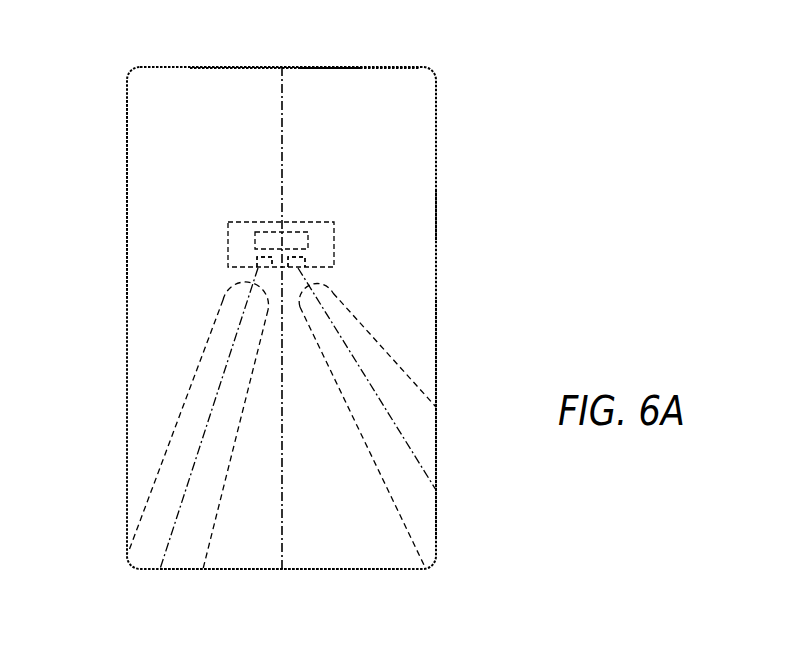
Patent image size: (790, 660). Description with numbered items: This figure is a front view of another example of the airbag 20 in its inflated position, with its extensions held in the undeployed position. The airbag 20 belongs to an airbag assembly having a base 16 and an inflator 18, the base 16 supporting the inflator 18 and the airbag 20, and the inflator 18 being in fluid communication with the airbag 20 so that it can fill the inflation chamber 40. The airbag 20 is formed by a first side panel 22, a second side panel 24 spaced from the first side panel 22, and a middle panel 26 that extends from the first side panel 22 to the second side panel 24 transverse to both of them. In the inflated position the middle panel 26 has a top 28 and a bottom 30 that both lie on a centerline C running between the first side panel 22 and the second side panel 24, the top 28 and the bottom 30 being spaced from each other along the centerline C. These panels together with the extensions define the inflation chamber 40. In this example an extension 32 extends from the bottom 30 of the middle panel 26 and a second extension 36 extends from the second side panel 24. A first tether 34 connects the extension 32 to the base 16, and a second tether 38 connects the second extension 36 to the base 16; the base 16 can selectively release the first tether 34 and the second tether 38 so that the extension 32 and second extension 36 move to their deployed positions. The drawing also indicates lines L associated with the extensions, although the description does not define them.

The base 16 is at (240, 240).
The inflator 18 is at (252, 221).
The airbag 20 is at (452, 157).
The first side panel 22 is at (127, 122).
The second side panel 24 is at (437, 522).
The middle panel 26 is at (380, 107).
The top 28 is at (200, 64).
The bottom 30 is at (224, 571).
The extension 32 is at (200, 362).
The first tether 34 is at (250, 282).
The second extension 36 is at (380, 340).
The second tether 38 is at (310, 282).
The inflation chamber 40 is at (428, 206).
The centerline C is at (282, 80).
The spray axis line L is at (192, 463).